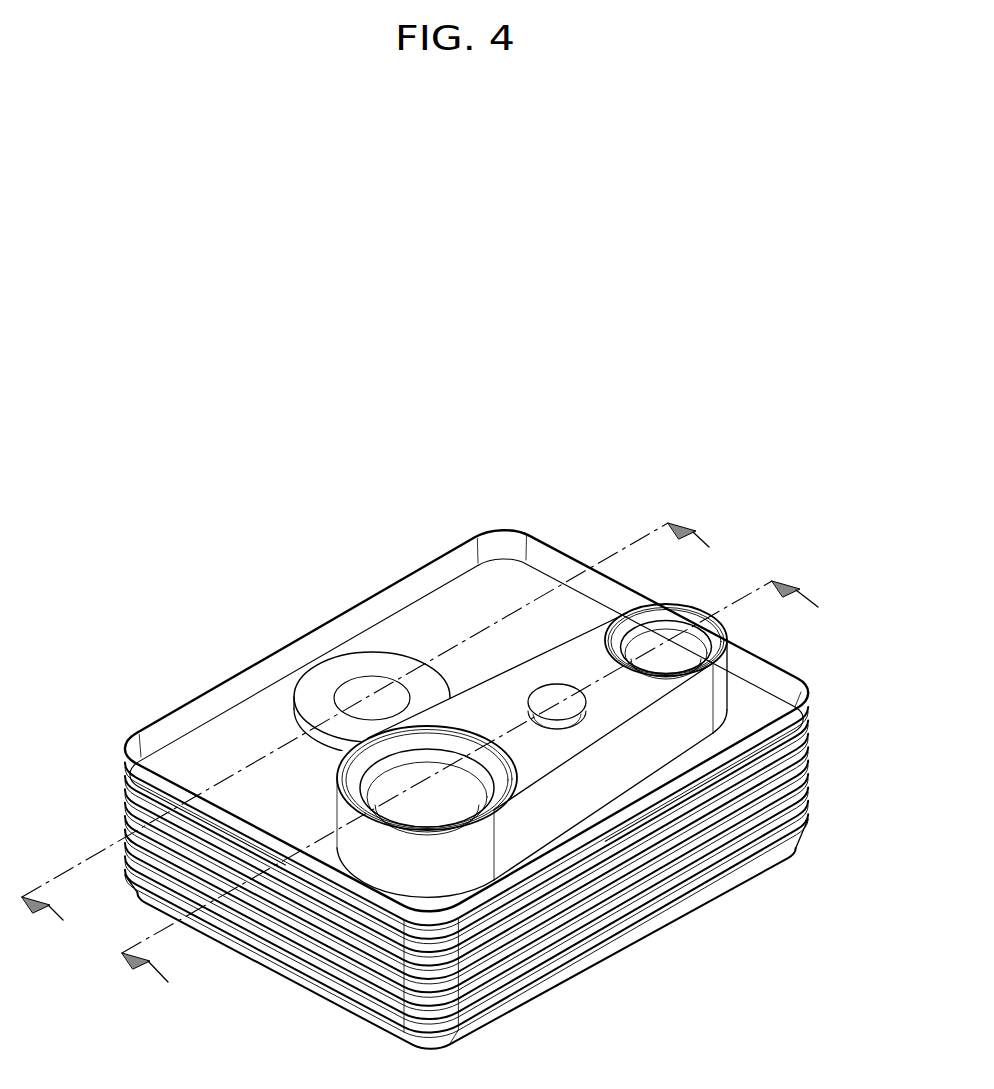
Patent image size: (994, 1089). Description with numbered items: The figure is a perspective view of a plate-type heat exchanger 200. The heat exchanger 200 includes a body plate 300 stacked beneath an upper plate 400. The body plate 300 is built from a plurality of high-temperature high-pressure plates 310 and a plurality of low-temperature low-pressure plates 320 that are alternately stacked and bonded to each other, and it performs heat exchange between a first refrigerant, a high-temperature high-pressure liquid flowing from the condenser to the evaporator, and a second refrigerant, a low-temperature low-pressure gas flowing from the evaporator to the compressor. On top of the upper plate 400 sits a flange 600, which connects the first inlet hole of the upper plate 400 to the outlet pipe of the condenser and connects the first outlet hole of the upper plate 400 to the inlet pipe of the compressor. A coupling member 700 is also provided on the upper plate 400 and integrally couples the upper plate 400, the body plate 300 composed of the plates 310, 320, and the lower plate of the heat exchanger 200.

The plate-type heat exchanger 200 is at (651, 436).
The body plate 300 is at (872, 830).
The high-temperature high-pressure plate 310 is at (807, 698).
The low-temperature low-pressure plate 320 is at (809, 716).
The upper plate 400 is at (512, 585).
The flange 600 is at (592, 638).
The coupling member 700 is at (351, 658).